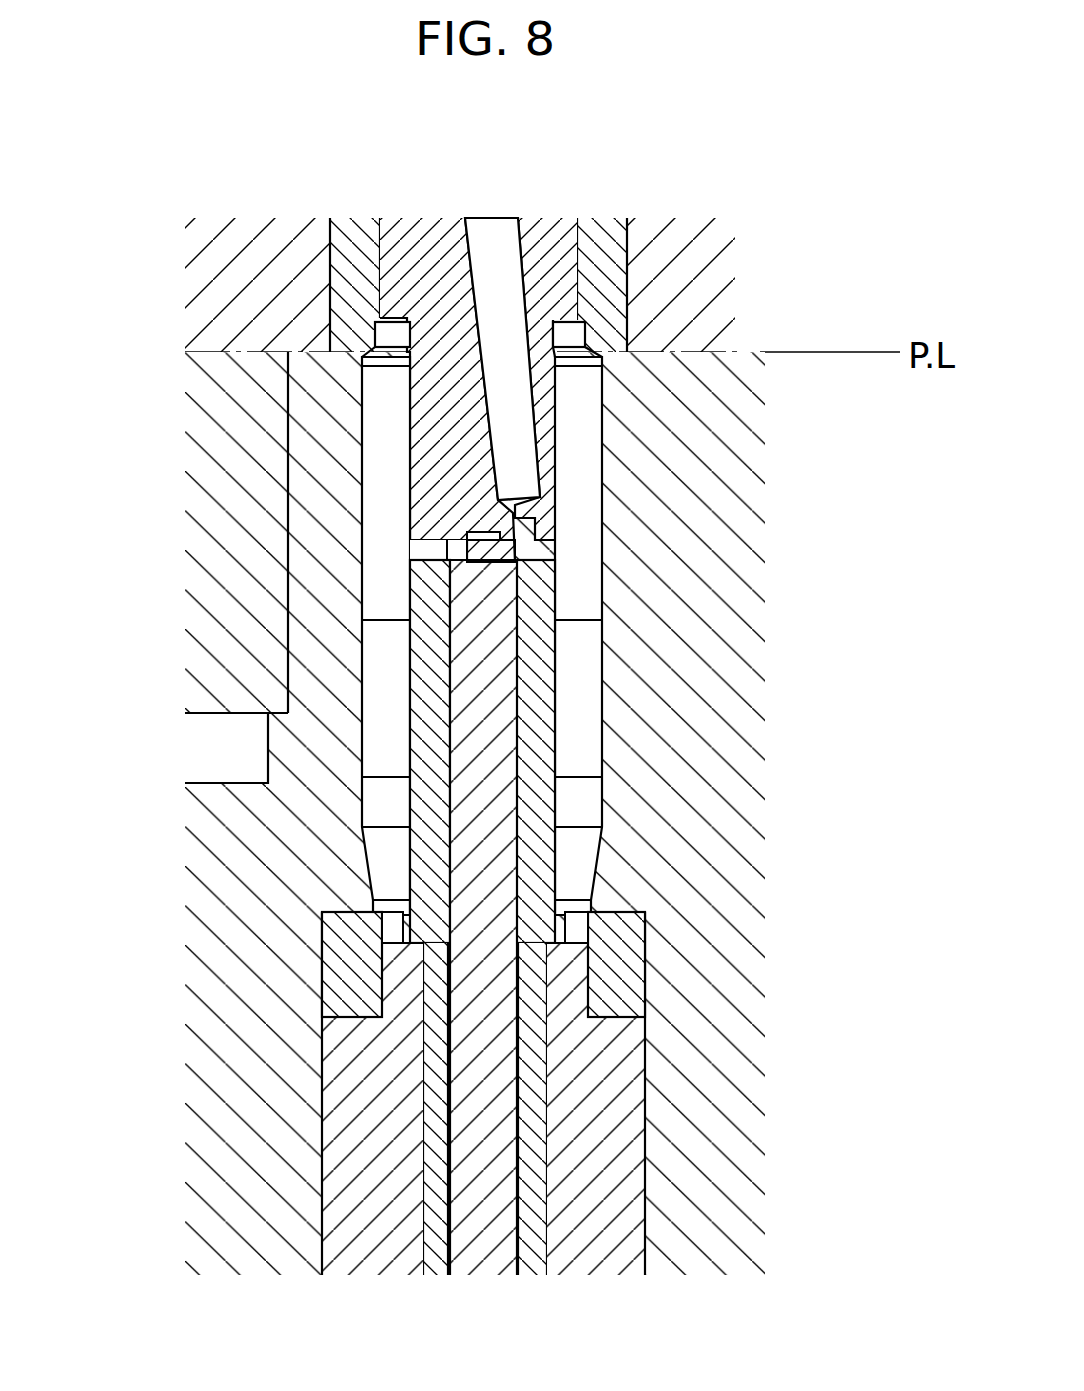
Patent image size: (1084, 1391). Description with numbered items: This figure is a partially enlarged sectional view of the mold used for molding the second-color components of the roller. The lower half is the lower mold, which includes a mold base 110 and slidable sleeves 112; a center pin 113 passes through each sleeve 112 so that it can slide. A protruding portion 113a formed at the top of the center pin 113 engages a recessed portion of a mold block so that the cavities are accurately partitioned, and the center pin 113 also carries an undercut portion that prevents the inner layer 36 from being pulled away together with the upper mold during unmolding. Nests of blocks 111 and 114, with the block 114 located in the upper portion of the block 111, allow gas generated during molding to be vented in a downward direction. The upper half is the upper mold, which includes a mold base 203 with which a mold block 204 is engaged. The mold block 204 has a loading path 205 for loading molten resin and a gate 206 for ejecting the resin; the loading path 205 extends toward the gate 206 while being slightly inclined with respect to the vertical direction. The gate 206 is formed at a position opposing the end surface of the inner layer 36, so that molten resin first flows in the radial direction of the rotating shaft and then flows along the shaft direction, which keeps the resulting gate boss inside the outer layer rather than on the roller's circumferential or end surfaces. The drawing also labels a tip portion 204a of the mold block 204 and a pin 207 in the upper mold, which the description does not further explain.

The mold base 203 is at (703, 275).
The mold block 204 is at (558, 258).
The tip of sprue bushing 204a is at (480, 530).
The loading path 205 is at (500, 258).
The gate 206 is at (527, 520).
The guide pin 207 is at (583, 517).
The inner layer 36 is at (540, 668).
The mold base 110 is at (712, 774).
The block 111 is at (620, 1040).
The sleeve 112 is at (540, 1190).
The center pin 113 is at (497, 1088).
The protruding portion 113a is at (483, 545).
The block 114 is at (620, 958).